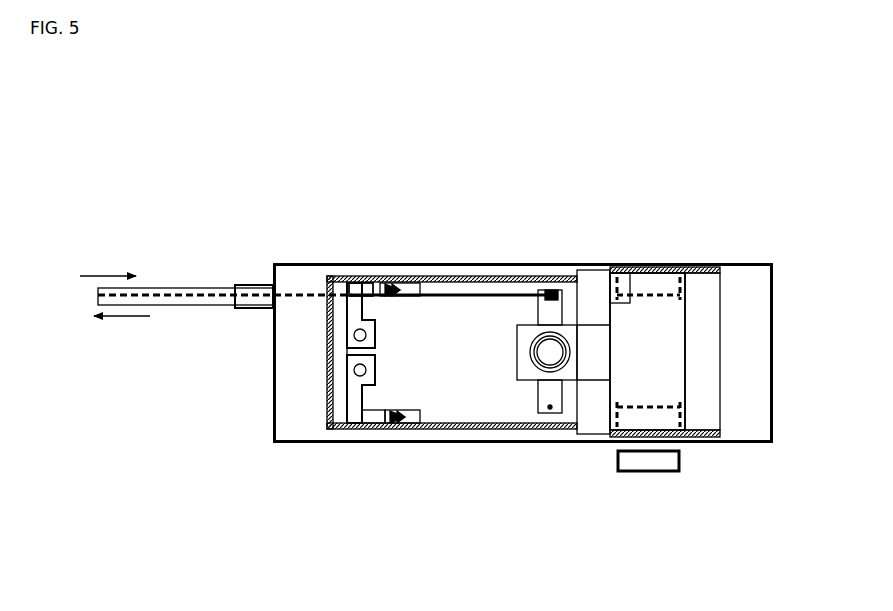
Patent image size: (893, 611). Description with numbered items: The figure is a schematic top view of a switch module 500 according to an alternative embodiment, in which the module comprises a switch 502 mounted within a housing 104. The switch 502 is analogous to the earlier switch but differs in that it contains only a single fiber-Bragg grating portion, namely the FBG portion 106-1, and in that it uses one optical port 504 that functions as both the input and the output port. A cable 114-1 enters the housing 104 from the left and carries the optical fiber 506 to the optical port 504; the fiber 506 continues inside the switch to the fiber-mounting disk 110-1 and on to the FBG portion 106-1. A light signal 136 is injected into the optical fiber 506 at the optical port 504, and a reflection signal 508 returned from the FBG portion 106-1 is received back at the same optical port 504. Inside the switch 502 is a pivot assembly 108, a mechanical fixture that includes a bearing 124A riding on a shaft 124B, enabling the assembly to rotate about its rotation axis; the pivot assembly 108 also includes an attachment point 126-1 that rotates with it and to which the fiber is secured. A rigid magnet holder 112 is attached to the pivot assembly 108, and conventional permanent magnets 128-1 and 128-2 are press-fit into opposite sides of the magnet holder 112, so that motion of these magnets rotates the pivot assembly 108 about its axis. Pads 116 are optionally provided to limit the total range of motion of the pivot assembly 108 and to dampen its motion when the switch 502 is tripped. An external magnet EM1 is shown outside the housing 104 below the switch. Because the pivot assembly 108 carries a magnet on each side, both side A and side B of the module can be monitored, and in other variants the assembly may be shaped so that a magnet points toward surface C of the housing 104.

The switch module 500 is at (136, 159).
The housing 104 is at (775, 428).
The switch 502 is at (452, 446).
The pivot assembly 108 is at (483, 357).
The pads 116 is at (696, 266).
The permanent magnet 128-1 is at (685, 285).
The permanent magnet 128-2 is at (670, 402).
The magnet holder 112 is at (690, 352).
The bearing 124A is at (616, 294).
The shaft 124B is at (538, 331).
The attachment point 126-1 is at (554, 287).
The fiber-Bragg grating portion 106-1 is at (452, 293).
The fiber-mounting disk 110-1 is at (354, 291).
The optical fiber 506 is at (303, 292).
The cable 114-1 is at (153, 288).
The optical port 504 is at (80, 295).
The light signal 136 is at (110, 272).
The reflection signal 508 is at (123, 318).
The external magnet EM1 is at (663, 460).
The side A is at (694, 455).
The side B is at (639, 245).
The surface C is at (793, 350).